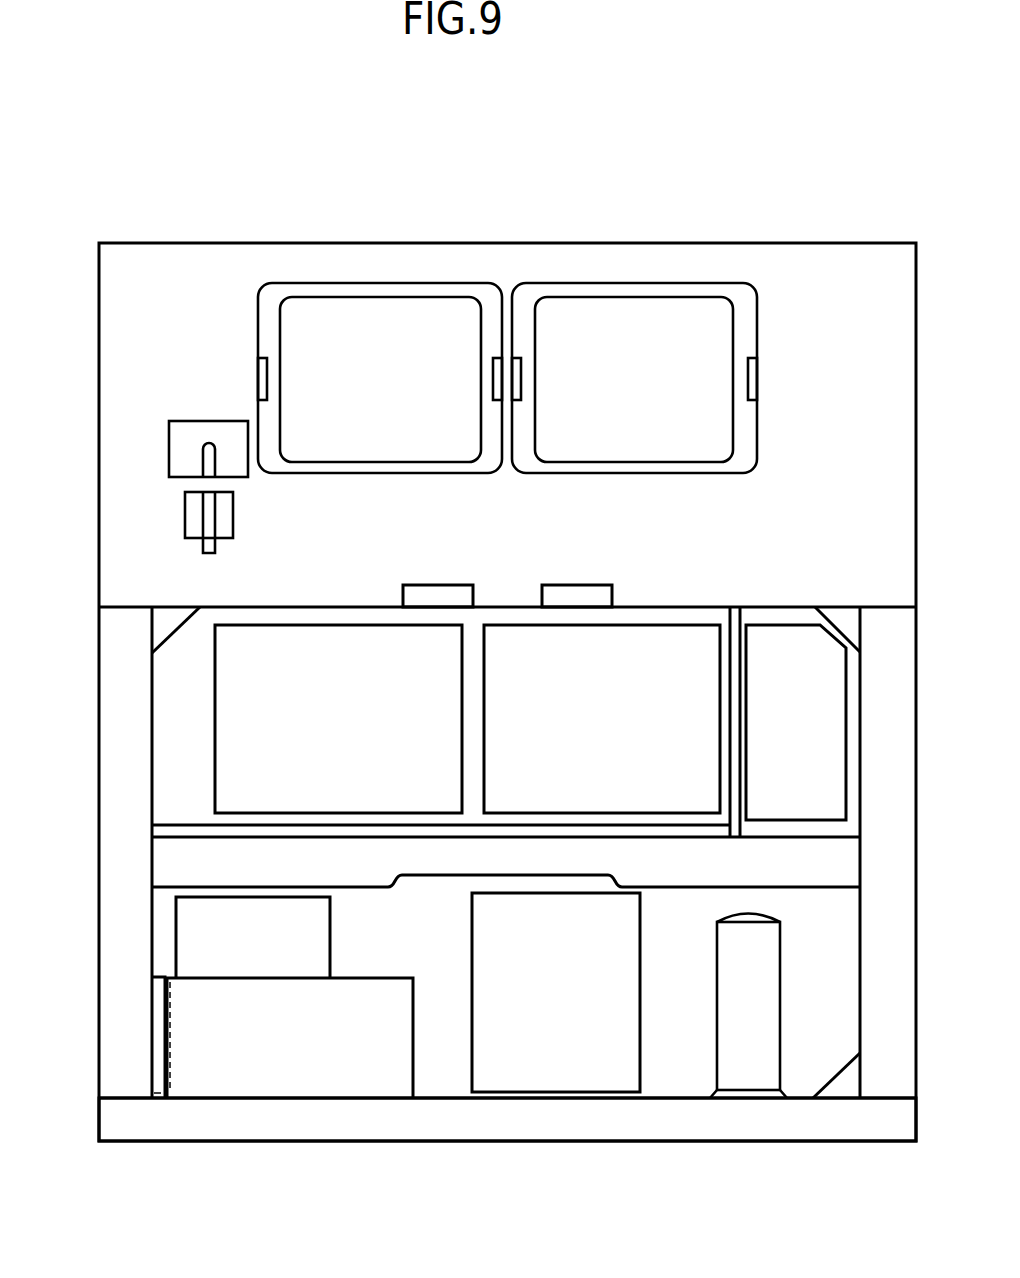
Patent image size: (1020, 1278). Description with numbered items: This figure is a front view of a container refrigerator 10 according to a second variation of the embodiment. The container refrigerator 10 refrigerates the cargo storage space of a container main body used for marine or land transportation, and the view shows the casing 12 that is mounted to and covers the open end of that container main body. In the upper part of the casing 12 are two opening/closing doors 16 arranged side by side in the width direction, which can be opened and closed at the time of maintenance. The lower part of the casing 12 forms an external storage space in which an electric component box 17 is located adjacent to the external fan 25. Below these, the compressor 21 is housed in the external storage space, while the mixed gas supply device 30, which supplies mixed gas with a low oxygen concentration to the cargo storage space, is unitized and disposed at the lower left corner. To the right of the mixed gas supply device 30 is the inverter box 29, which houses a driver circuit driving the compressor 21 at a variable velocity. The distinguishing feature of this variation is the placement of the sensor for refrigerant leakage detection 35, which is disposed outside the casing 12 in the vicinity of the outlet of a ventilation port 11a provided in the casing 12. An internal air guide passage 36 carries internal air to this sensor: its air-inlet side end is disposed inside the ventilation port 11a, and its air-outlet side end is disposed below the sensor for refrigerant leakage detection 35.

The container refrigerator 10 is at (147, 188).
The opening/closing door 16 is at (370, 322).
The ventilation port 11a is at (193, 421).
The internal air guide passage 36 is at (207, 462).
The sensor for refrigerant leakage detection 35 is at (193, 515).
The electric component box 17 is at (340, 633).
The external fan 25 is at (690, 636).
The mixed gas supply device 30 is at (242, 897).
The inverter box 29 is at (542, 1032).
The compressor 21 is at (717, 1053).
The casing 12 is at (790, 1122).